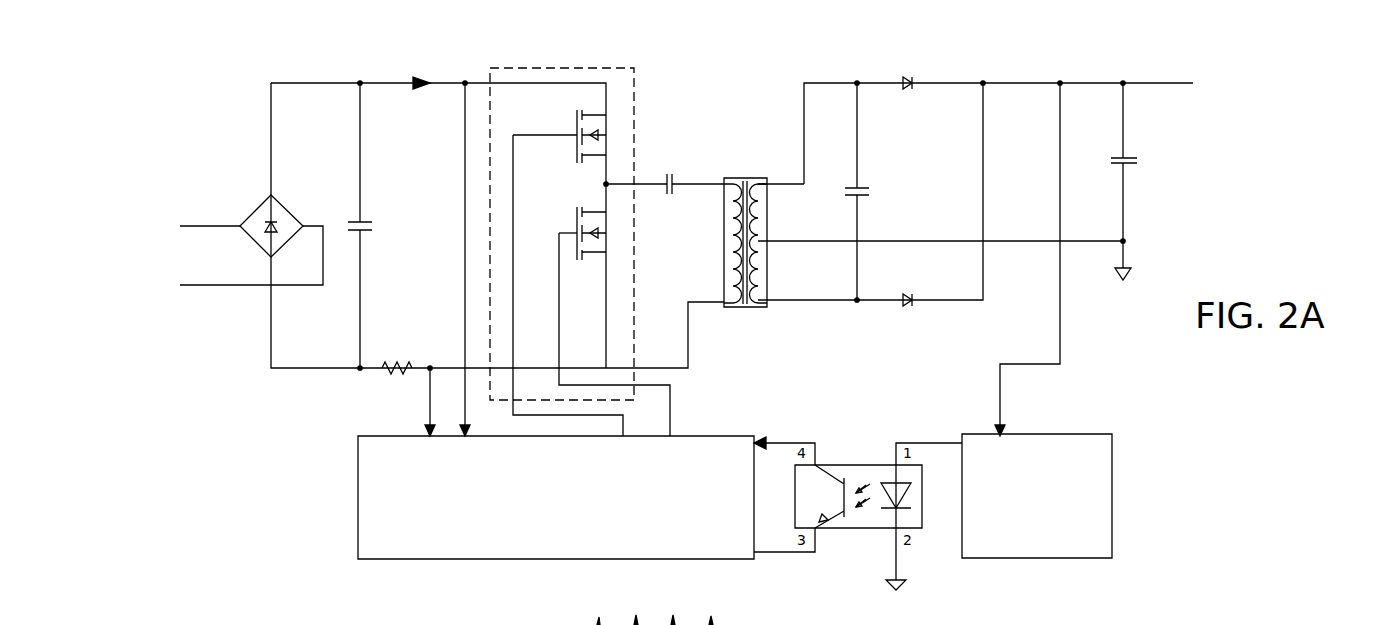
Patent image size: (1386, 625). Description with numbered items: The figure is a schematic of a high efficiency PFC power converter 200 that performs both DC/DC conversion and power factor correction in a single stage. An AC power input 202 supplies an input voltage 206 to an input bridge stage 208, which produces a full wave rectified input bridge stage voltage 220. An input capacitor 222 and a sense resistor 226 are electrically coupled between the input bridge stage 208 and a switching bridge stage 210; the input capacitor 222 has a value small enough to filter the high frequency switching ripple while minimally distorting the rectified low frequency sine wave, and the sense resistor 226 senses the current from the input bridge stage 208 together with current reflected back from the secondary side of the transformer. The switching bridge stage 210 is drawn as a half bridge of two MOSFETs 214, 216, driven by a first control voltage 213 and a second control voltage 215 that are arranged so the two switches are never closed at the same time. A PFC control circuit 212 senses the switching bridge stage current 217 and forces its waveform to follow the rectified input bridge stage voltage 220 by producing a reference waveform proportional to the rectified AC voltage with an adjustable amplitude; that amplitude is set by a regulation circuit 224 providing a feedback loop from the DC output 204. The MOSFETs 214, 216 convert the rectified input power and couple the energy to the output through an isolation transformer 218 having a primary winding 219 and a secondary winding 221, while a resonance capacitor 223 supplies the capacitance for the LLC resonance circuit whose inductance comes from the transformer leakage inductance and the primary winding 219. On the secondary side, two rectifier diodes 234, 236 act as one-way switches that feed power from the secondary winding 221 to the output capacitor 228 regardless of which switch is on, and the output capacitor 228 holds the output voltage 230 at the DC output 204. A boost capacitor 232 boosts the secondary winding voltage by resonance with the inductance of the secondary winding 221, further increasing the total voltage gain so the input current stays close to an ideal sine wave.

The high efficiency PFC power converter 200 is at (218, 129).
The power input ACIN 202 is at (208, 266).
The DCOUT 204 is at (1207, 150).
The input voltage VIN 206 is at (195, 191).
The input bridge stage 208 is at (281, 208).
The switching bridge stage 210 is at (634, 68).
The PFC control circuit 212 is at (572, 551).
The control voltage VG1 213 is at (510, 115).
The MOSFET 214 is at (579, 118).
The control voltage VG2 215 is at (533, 245).
The MOSFET 216 is at (579, 218).
The switching bridge stage current IPIN 217 is at (380, 62).
The transformer 218 is at (743, 178).
The primary winding 219 is at (735, 274).
The rectified input bridge stage voltage VPIN 220 is at (297, 69).
The secondary winding 221 is at (760, 284).
The input capacitor 222 is at (367, 225).
The resonance capacitor 223 is at (676, 180).
The regulation circuit 224 is at (1052, 546).
The sense resistor 226 is at (396, 362).
The output capacitor 228 is at (1130, 160).
The output voltage VOUT 230 is at (1201, 72).
The boost capacitor 232 is at (866, 191).
The diode 234 is at (903, 80).
The diode 236 is at (903, 307).